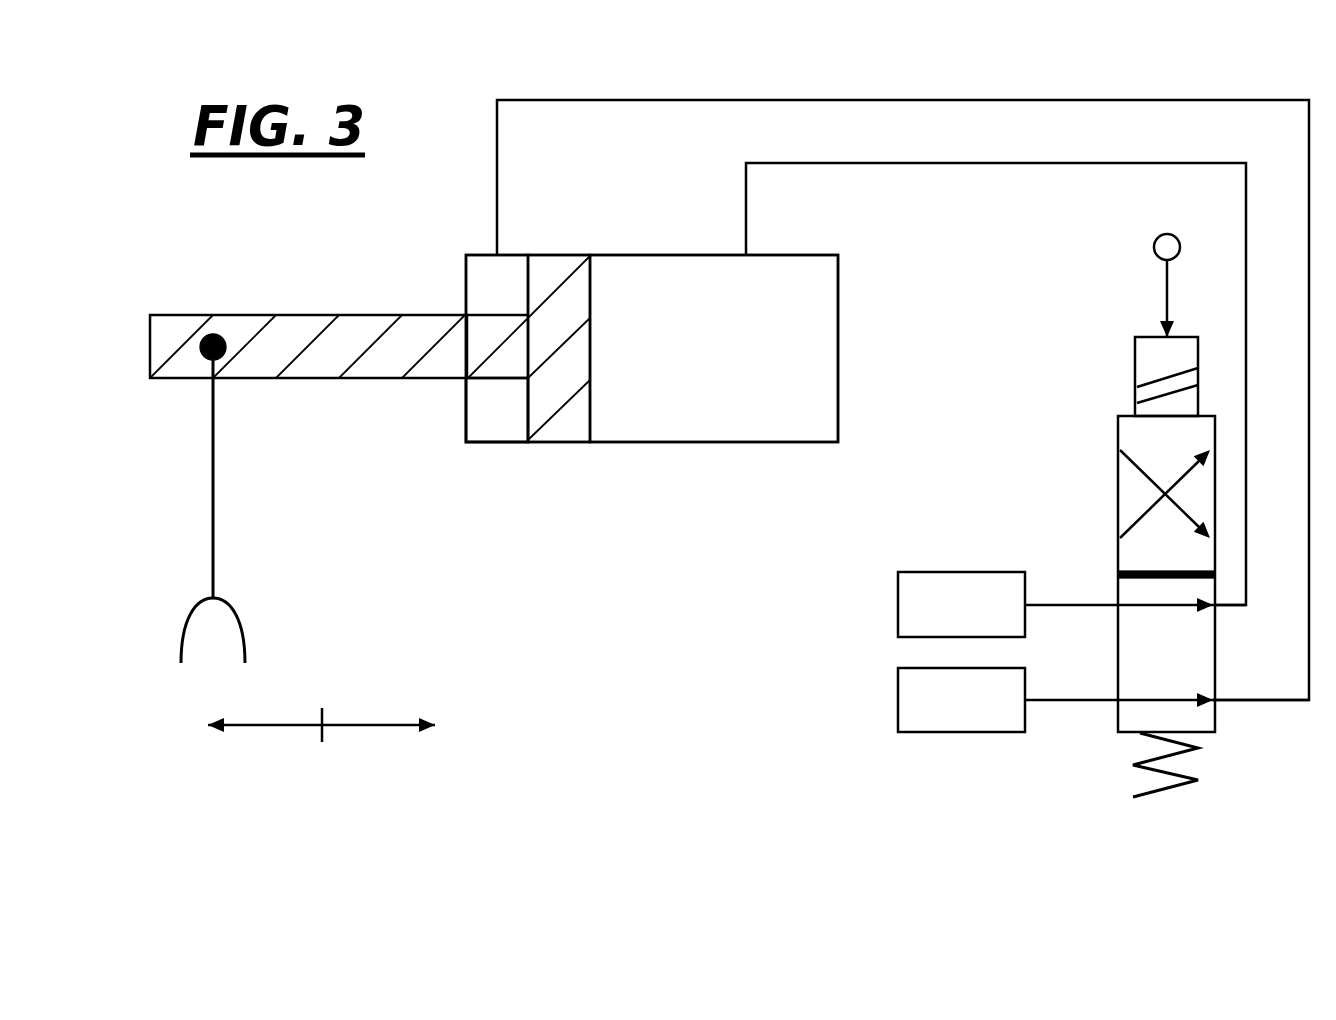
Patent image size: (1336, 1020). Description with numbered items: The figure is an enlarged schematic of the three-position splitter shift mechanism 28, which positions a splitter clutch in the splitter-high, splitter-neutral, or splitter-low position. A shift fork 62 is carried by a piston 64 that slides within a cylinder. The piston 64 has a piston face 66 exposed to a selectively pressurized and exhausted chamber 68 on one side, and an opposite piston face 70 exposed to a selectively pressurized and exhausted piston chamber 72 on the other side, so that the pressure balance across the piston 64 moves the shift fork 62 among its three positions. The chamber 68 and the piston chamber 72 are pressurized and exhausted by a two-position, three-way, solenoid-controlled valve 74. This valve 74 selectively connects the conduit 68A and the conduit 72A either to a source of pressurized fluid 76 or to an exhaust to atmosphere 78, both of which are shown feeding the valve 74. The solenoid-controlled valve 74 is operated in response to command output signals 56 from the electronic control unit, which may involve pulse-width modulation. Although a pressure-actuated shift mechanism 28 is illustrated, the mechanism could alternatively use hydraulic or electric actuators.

The splitter shift mechanism 28 is at (712, 792).
The command output signals 56 is at (1150, 292).
The shift fork 62 is at (213, 528).
The piston 64 is at (560, 380).
The piston face 66 is at (528, 288).
The chamber 68 is at (498, 410).
The conduit 68A is at (652, 100).
The piston face 70 is at (593, 287).
The piston chamber 72 is at (715, 395).
The conduit 72A is at (915, 163).
The solenoid-controlled valve 74 is at (1247, 670).
The source of pressurized fluid 76 is at (960, 572).
The exhaust to atmosphere 78 is at (960, 732).